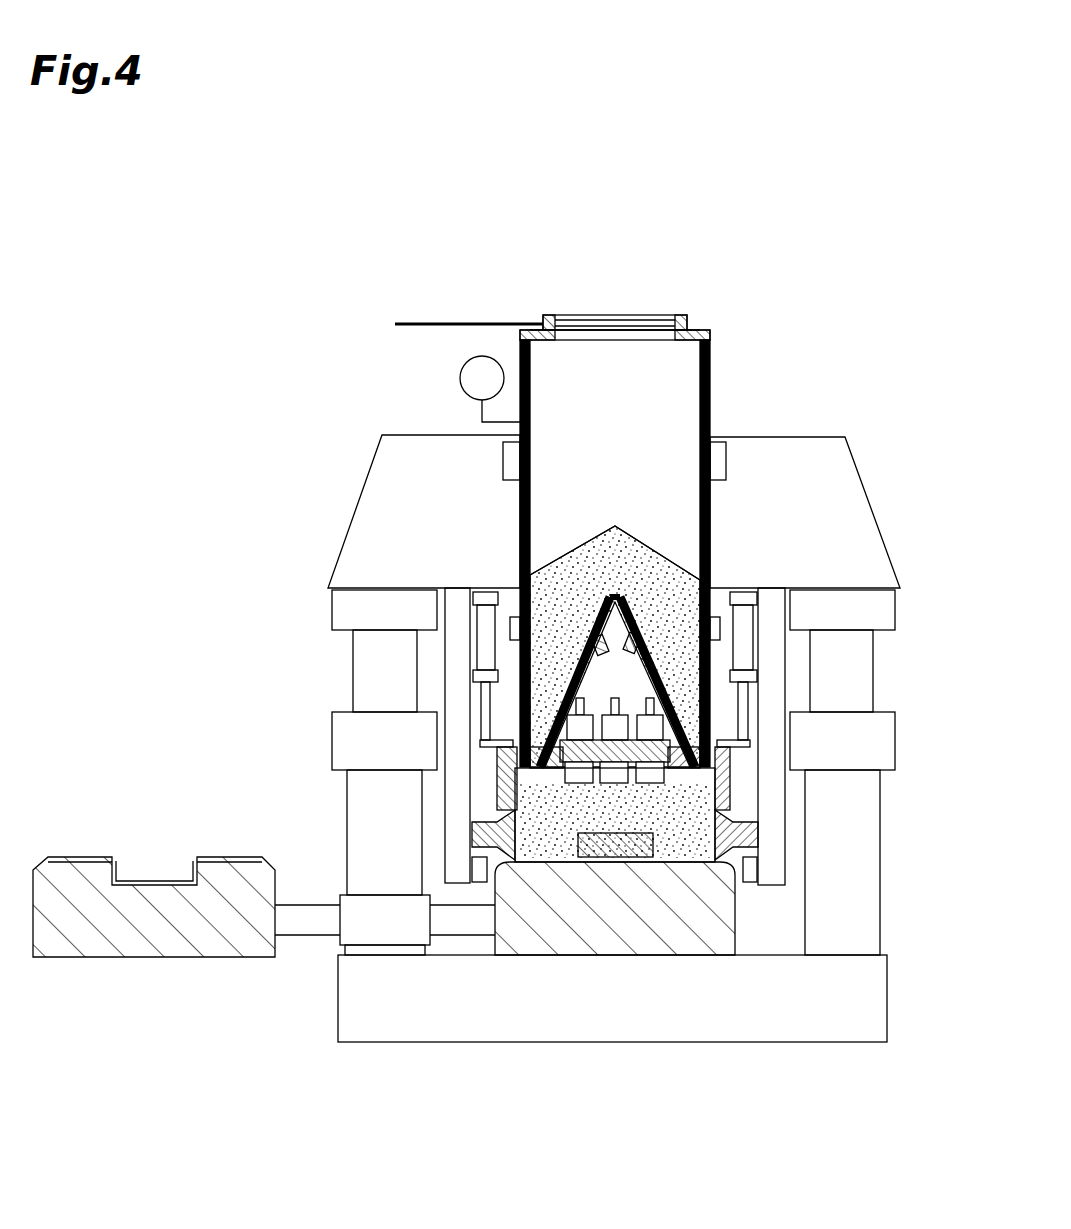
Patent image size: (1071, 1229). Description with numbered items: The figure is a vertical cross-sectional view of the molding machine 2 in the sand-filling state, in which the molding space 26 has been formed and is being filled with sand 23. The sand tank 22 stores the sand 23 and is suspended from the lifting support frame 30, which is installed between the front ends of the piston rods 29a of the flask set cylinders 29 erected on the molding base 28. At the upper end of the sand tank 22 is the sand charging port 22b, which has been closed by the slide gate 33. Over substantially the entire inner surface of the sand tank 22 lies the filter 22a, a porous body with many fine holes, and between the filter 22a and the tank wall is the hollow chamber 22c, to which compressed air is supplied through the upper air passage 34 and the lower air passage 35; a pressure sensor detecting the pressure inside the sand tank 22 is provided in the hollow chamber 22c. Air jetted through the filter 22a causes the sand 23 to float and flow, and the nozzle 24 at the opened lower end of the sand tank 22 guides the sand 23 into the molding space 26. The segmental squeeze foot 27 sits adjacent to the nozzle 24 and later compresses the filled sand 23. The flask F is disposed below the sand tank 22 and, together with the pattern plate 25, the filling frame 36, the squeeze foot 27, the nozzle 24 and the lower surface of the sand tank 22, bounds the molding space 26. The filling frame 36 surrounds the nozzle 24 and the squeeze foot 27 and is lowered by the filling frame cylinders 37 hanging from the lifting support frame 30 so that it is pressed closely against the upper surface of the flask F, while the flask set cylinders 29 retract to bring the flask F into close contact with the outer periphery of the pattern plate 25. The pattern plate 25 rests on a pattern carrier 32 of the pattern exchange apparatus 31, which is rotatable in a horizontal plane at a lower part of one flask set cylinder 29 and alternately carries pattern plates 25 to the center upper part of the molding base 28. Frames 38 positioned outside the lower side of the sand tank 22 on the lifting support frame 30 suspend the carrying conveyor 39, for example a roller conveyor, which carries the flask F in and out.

The molding machine 2 is at (797, 206).
The sand tank 22 is at (712, 362).
The filter 22a is at (533, 355).
The sand charging port 22b is at (620, 316).
The hollow chamber 22c is at (712, 400).
The sand 23 is at (585, 542).
The nozzle 24 is at (712, 770).
The pattern plate 25 is at (217, 857).
The molding space 26 is at (515, 850).
The segmental squeeze foot 27 is at (560, 775).
The molding base 28 is at (872, 994).
The flask set cylinders 29 is at (353, 670).
The piston rods 29a is at (363, 700).
The lifting support frame 30 is at (855, 482).
The pattern exchange apparatus 31 is at (338, 943).
The pattern carrier 32 is at (598, 945).
The slide gate 33 is at (428, 323).
The upper air passage 34 is at (505, 461).
The lower air passage 35 is at (726, 460).
The filling frame 36 is at (733, 793).
The filling frame cylinders 37 is at (466, 620).
The frames 38 is at (478, 645).
The carrying conveyor 39 is at (750, 885).
The flask F is at (526, 838).